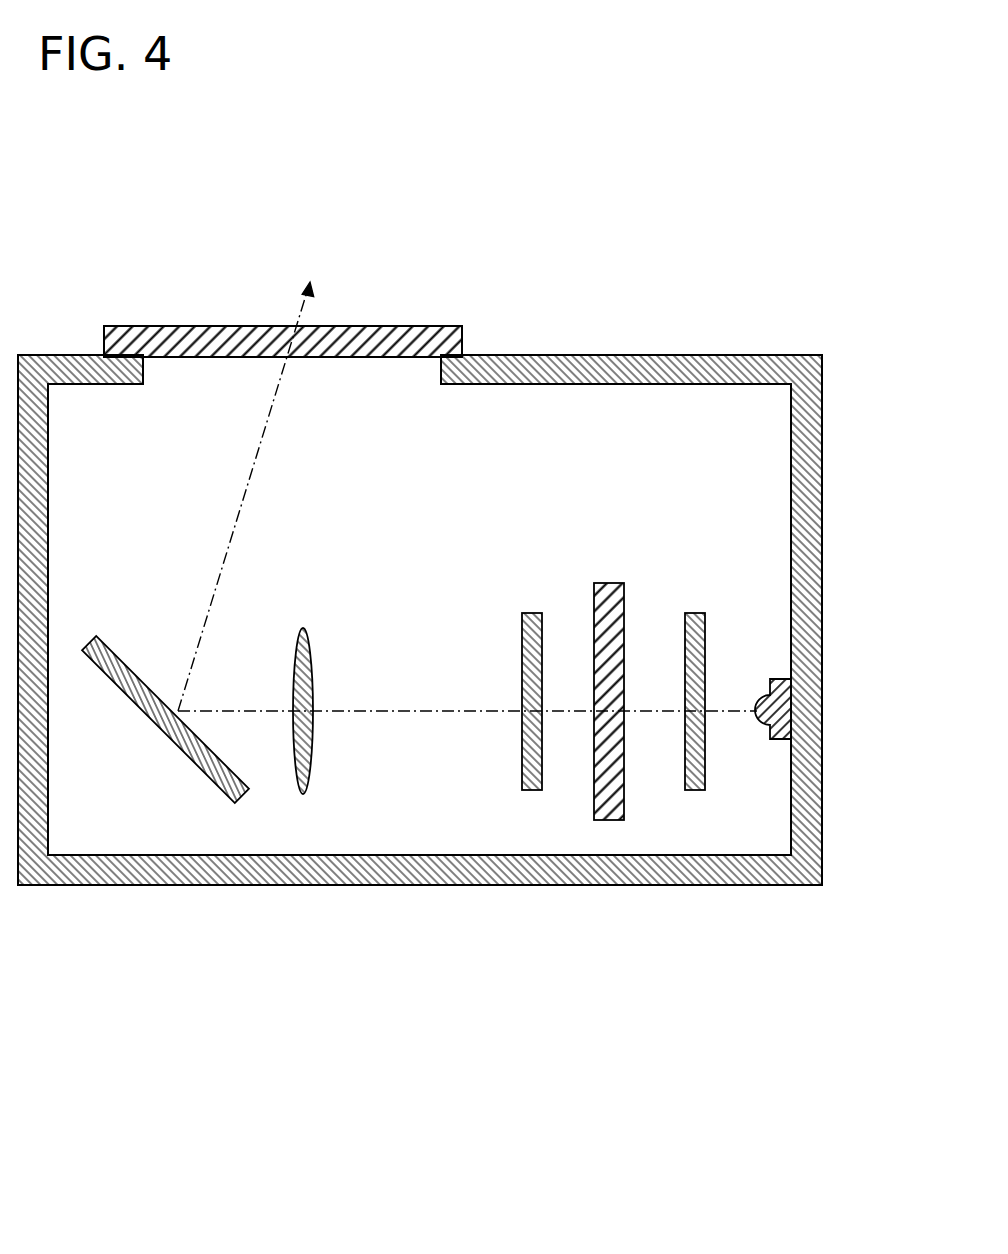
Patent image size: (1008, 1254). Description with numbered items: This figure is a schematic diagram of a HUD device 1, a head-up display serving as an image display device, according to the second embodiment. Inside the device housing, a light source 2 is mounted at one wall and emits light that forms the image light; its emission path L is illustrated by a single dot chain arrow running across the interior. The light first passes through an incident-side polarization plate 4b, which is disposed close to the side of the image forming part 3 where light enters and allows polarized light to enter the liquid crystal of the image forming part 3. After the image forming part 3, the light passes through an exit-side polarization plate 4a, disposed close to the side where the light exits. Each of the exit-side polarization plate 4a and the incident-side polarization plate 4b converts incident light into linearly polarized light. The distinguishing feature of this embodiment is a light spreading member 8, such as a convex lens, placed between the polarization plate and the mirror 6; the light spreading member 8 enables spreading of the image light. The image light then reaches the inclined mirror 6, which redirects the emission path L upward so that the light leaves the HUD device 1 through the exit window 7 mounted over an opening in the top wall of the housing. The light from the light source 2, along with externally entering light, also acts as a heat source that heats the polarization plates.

The HUD device 1 is at (653, 318).
The light source 2 is at (785, 680).
The image forming part 3 is at (610, 607).
The exit-side polarization plate 4a is at (535, 790).
The incident-side polarization plate 4b is at (705, 778).
The mirror 6 is at (148, 715).
The exit window 7 is at (348, 324).
The light spreading member 8 is at (297, 767).
The emission path L is at (362, 711).